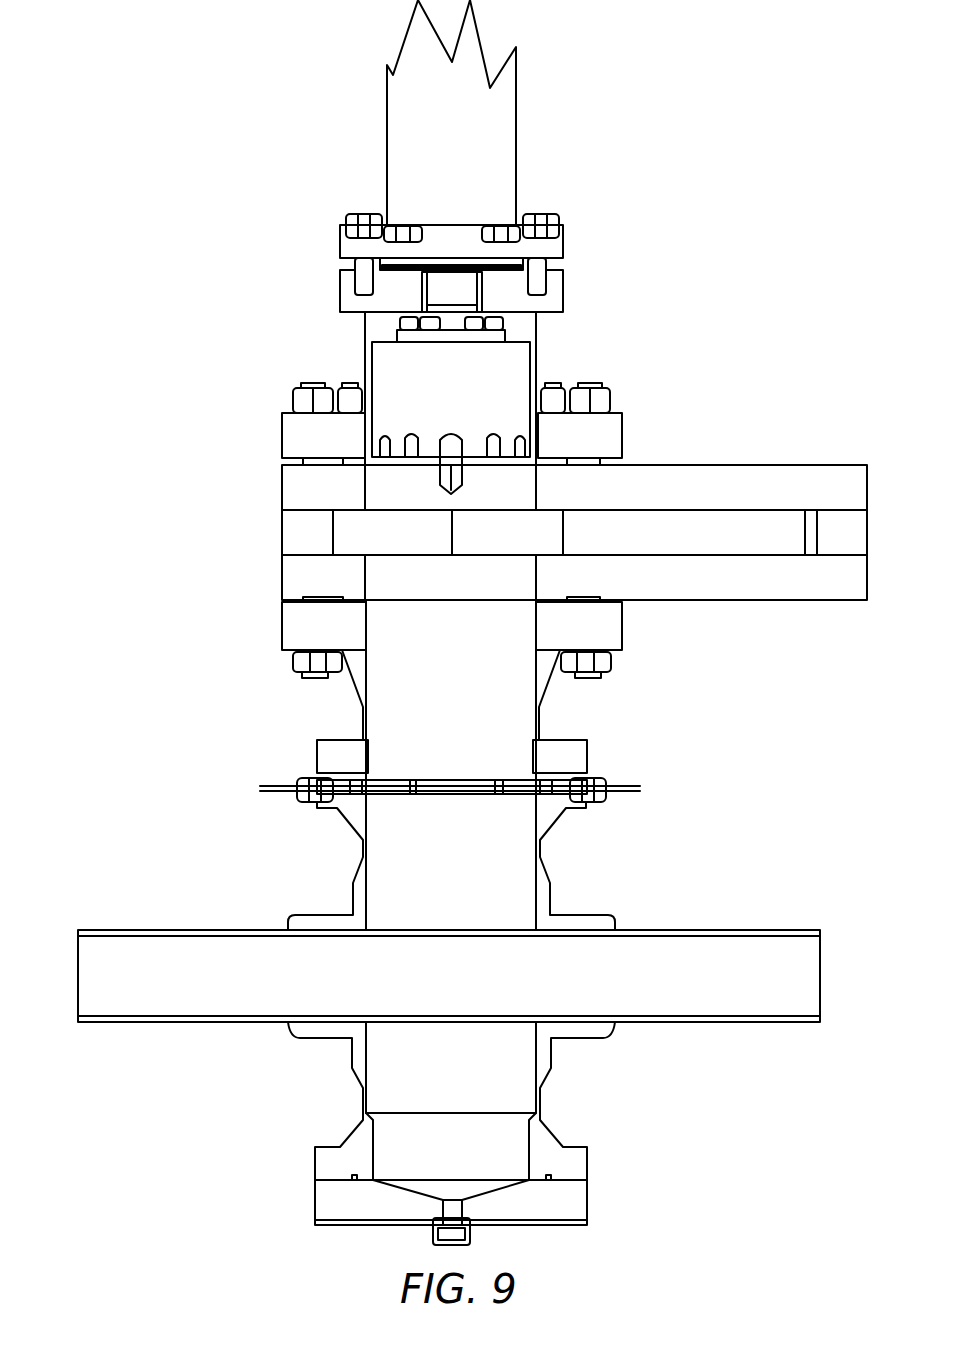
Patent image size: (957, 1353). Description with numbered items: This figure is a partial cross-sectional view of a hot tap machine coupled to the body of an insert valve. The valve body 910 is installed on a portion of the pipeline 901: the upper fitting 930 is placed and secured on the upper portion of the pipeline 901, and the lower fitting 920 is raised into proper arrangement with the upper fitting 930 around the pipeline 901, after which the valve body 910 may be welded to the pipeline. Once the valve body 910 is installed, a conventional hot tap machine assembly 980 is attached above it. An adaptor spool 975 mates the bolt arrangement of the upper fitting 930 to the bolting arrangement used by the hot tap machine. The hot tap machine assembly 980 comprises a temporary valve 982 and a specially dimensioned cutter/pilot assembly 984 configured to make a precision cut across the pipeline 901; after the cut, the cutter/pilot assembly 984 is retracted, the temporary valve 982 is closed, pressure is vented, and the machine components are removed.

The hot tap machine assembly 980 is at (222, 151).
The cutter/pilot assembly 984 is at (530, 353).
The temporary valve 982 is at (780, 465).
The adaptor spool 975 is at (613, 625).
The valve body 910 is at (436, 992).
The pipeline 901 is at (100, 929).
The upper fitting 930 is at (302, 927).
The lower fitting 920 is at (290, 1030).